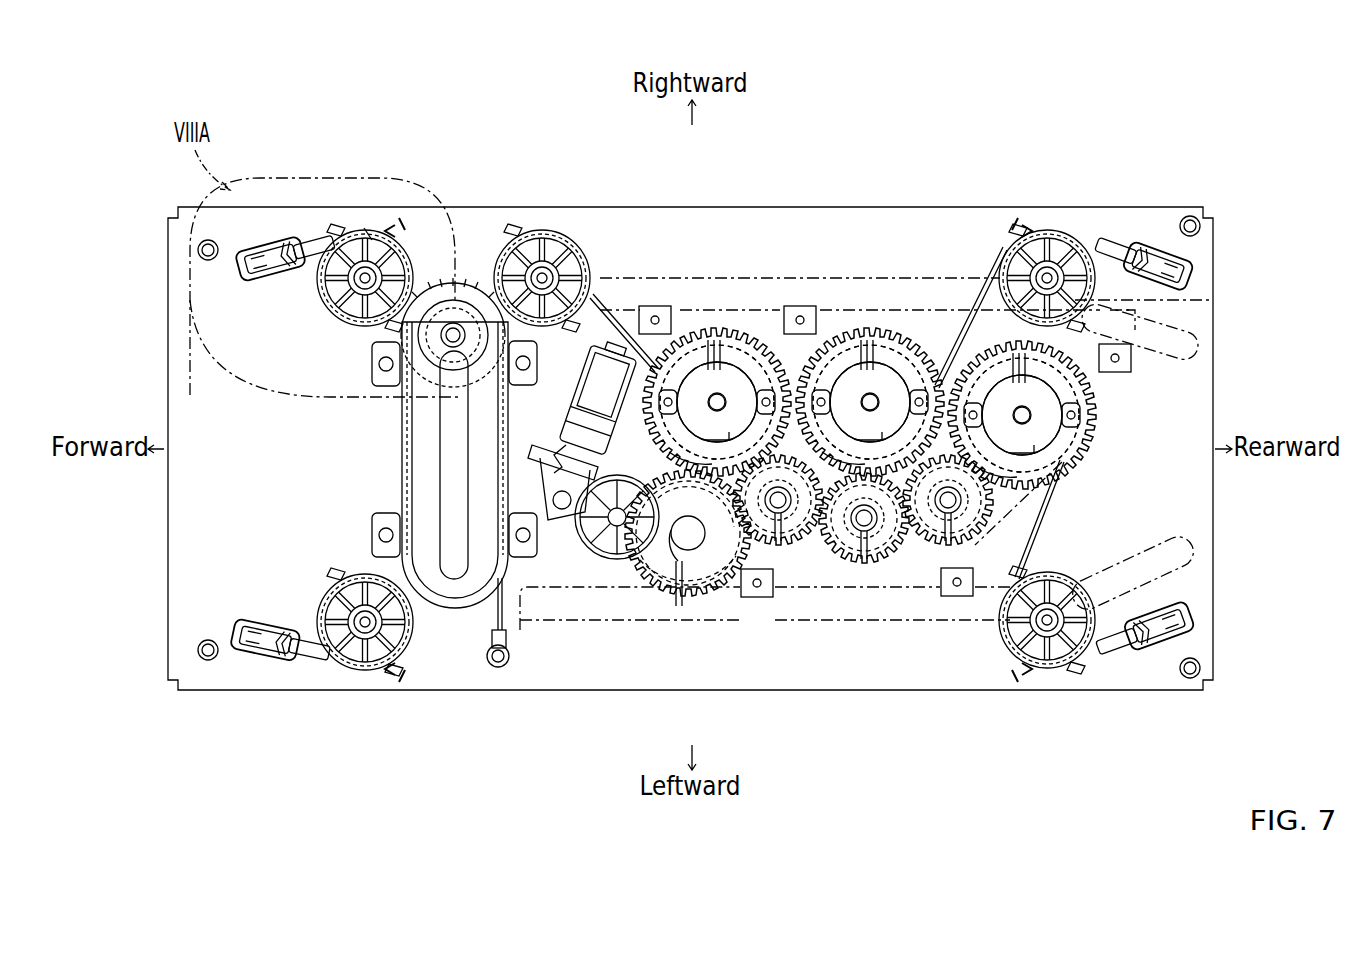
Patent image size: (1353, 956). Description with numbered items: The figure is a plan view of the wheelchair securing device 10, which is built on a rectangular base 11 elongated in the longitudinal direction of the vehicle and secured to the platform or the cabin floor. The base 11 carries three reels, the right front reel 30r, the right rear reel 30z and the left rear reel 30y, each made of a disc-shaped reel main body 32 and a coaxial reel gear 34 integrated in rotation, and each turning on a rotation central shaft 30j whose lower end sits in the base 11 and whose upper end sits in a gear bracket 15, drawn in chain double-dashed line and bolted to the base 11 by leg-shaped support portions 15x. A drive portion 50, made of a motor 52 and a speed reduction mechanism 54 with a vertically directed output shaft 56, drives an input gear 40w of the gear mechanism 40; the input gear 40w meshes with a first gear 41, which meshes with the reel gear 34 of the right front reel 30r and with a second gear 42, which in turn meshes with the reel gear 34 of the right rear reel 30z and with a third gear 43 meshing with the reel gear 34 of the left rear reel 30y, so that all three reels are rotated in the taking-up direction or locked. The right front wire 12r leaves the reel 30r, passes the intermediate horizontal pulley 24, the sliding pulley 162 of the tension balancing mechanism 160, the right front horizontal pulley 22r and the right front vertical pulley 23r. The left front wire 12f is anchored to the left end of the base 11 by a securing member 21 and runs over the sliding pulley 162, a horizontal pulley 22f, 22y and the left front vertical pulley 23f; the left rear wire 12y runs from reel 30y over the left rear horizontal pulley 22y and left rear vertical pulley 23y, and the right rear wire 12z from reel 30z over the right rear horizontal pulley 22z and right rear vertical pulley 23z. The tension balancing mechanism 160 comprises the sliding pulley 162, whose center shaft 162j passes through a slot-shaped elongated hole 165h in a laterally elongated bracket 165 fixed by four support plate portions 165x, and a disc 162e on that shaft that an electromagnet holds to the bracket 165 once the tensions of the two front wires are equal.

The wheelchair securing device 10 is at (792, 193).
The rectangular base 11 is at (838, 209).
The right front wire 12r is at (322, 235).
The left front wire 12f is at (505, 620).
The left rear wire 12y is at (1045, 512).
The right rear wire 12z is at (1060, 240).
The gear bracket 15 is at (907, 612).
The support portions 15x is at (655, 318).
The securing member 21 is at (498, 668).
The right front horizontal pulley 22r is at (378, 232).
The left front horizontal pulley 22f is at (380, 668).
The left rear horizontal pulley 22y is at (1040, 668).
The right rear horizontal pulley 22z is at (1032, 232).
The right front vertical pulley 23r is at (292, 240).
The left front vertical pulley 23f is at (290, 655).
The left rear vertical pulley 23y is at (1135, 650).
The right rear vertical pulley 23z is at (1140, 240).
The intermediate horizontal pulley 24 is at (545, 262).
The right front reel 30r is at (723, 300).
The right rear reel 30z is at (910, 300).
The left rear reel 30y is at (1083, 349).
The rotation central shafts 30j is at (720, 395).
The reel main bodies 32 is at (700, 372).
The reel gears 34 is at (705, 340).
The gear mechanism 40 is at (755, 565).
The input gear 40w is at (690, 590).
The first gear 41 is at (770, 548).
The second gear 42 is at (868, 565).
The third gear 43 is at (940, 548).
The drive portion 50 is at (595, 501).
The motor 52 is at (595, 395).
The speed reduction mechanism 54 is at (552, 515).
The output shaft 56 is at (610, 560).
The tension balancing mechanism 160 is at (416, 446).
The sliding pulley 162 is at (387, 305).
The disc 162e is at (453, 305).
The center shaft 162j is at (440, 336).
The bracket 165 is at (420, 440).
The slot-shaped elongated hole 165h is at (454, 575).
The support plate portions 165x is at (372, 520).